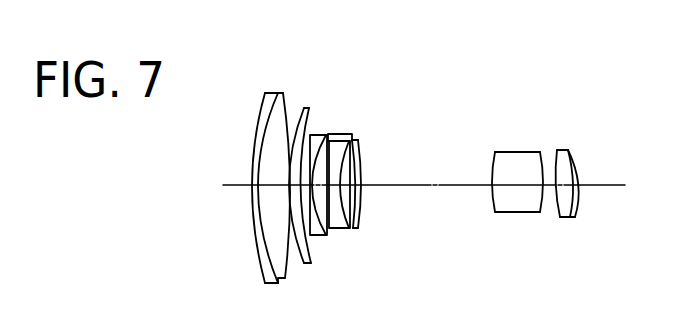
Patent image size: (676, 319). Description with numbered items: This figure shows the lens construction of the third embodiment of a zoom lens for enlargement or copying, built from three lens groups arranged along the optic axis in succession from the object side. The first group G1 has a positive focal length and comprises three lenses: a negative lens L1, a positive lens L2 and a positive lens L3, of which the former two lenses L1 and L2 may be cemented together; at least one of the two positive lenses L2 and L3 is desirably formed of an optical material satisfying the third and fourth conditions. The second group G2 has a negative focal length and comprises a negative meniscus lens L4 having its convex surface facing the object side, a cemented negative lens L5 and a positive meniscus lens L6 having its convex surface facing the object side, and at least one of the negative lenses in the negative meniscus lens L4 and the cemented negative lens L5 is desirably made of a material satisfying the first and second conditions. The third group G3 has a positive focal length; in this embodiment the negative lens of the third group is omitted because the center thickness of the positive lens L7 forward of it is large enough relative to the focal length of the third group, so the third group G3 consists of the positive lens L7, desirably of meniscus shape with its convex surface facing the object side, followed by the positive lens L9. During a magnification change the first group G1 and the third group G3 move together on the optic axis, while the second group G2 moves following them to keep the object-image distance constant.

The first group G1 is at (330, 42).
The second group G2 is at (420, 85).
The third group G3 is at (577, 85).
The negative lens L1 is at (270, 91).
The positive lens L2 is at (285, 91).
The positive lens L3 is at (304, 107).
The negative meniscus lens L4 is at (322, 134).
The cemented negative lens L5 is at (330, 132).
The positive meniscus lens L6 is at (356, 139).
The positive lens L7 is at (513, 151).
The positive lens L9 is at (579, 146).